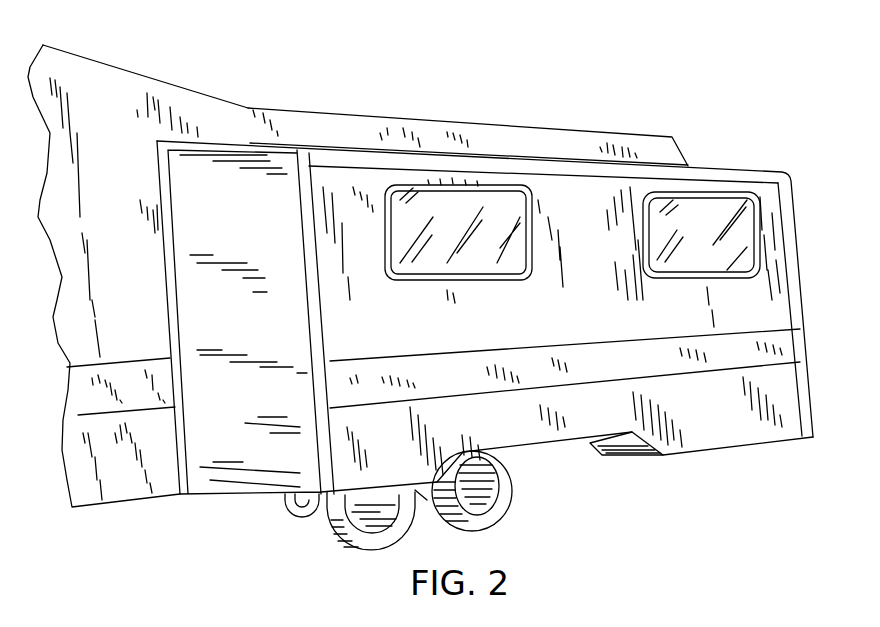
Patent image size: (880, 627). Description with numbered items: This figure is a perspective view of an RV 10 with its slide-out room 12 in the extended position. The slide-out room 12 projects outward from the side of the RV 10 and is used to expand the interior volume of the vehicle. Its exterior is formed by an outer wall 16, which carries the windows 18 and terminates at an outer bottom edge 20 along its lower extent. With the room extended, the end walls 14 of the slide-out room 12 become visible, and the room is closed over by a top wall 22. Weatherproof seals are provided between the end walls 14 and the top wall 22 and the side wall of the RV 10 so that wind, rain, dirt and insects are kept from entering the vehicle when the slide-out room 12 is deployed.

The RV 10 is at (522, 90).
The slide-out room 12 is at (755, 163).
The end walls 14 is at (801, 313).
The outer wall 16 is at (603, 363).
The windows 18 is at (533, 281).
The outer bottom edge 20 is at (715, 450).
The top wall 22 is at (397, 147).